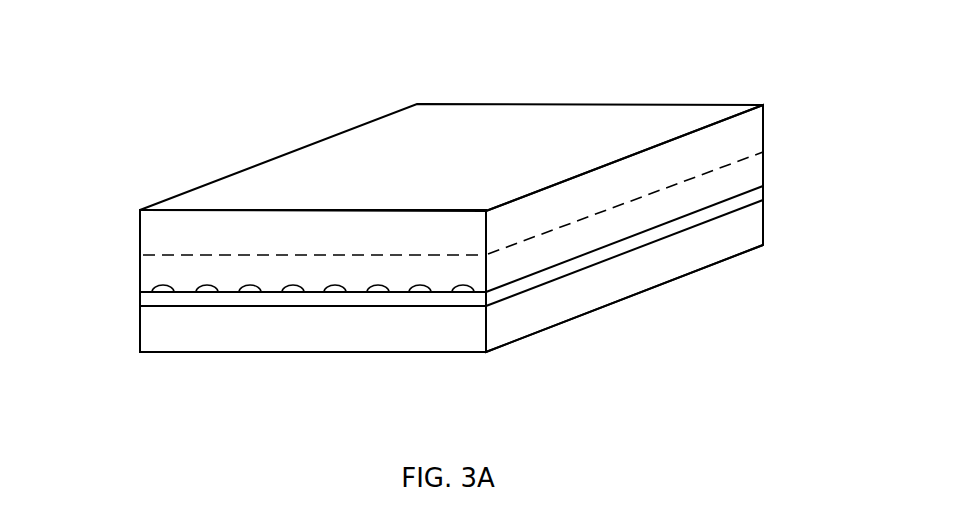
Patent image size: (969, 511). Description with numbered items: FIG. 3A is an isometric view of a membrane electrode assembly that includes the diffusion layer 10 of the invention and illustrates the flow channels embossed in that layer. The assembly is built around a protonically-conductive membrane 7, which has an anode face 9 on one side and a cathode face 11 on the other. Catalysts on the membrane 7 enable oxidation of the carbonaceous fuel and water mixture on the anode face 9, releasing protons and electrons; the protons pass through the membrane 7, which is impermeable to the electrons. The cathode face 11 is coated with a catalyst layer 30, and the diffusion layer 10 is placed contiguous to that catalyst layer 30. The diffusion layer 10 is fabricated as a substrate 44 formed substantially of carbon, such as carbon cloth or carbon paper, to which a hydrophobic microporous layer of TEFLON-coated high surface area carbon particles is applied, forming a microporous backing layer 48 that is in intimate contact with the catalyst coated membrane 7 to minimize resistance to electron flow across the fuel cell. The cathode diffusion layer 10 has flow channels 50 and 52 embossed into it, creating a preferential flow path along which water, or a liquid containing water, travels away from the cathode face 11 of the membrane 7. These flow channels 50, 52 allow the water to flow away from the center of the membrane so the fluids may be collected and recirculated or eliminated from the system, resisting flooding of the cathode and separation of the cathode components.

The diffusion layer 10 is at (760, 68).
The substrate 44 is at (140, 226).
The microporous backing layer 48 is at (152, 277).
The flow channel 50 is at (163, 291).
The flow channel 52 is at (245, 300).
The anode face 9 is at (388, 299).
The protonically-conductive membrane 7 is at (557, 326).
The cathode face 11 is at (680, 232).
The catalyst layer 30 is at (755, 193).